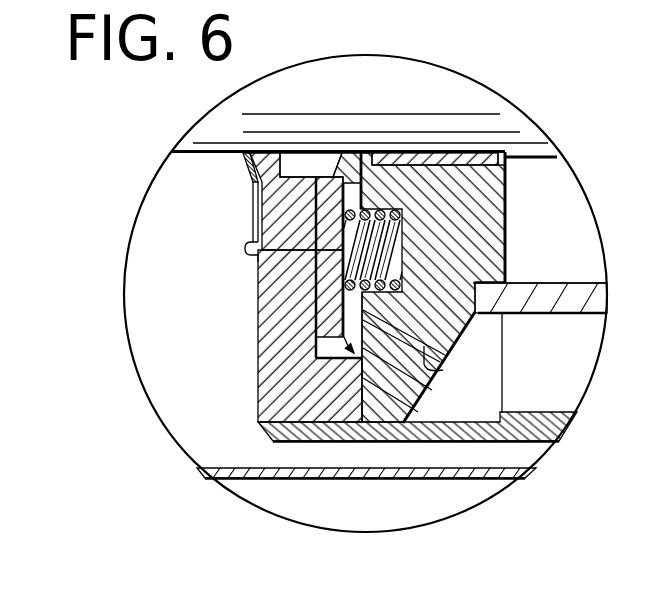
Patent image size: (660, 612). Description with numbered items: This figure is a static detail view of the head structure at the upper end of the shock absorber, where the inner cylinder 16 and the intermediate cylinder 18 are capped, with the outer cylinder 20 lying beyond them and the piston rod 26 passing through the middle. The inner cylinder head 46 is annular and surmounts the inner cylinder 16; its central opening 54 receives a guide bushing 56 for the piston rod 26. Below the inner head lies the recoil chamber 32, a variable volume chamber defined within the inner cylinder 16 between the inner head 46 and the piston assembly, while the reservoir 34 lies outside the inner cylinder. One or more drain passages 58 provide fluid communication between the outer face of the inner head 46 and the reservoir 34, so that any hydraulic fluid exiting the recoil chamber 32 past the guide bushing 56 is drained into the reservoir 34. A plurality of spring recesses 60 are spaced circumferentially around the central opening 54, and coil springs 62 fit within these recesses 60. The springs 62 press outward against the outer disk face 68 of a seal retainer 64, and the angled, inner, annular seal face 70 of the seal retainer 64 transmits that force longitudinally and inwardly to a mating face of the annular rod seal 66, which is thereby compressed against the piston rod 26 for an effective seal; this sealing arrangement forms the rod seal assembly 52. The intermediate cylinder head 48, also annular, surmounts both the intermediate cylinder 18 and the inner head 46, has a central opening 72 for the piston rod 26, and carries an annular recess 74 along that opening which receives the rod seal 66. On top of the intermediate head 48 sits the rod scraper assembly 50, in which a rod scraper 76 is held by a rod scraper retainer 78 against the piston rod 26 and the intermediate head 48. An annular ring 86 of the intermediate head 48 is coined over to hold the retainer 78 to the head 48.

The inner cylinder 16 is at (581, 313).
The intermediate cylinder 18 is at (560, 429).
The outer cylinder 20 is at (455, 480).
The piston rod 26 is at (400, 87).
The recoil chamber 32 is at (557, 218).
The reservoir 34 is at (559, 356).
The inner cylinder head 46 is at (473, 185).
The intermediate cylinder head 48 is at (277, 358).
The rod scraper assembly 50 is at (243, 168).
The rod seal assembly 52 is at (507, 444).
The central opening 54 is at (550, 157).
The guide bushing 56 is at (452, 160).
The drain passage 58 is at (437, 378).
The spring recess 60 is at (368, 280).
The coil spring 62 is at (343, 250).
The seal retainer 64 is at (343, 303).
The rod seal 66 is at (286, 157).
The outer disk face 68 is at (606, 291).
The seal face 70 is at (313, 163).
The central opening 72 is at (247, 156).
The annular recess 74 is at (268, 152).
The rod scraper 76 is at (251, 217).
The rod scraper retainer 78 is at (251, 199).
The annular ring 86 is at (246, 253).